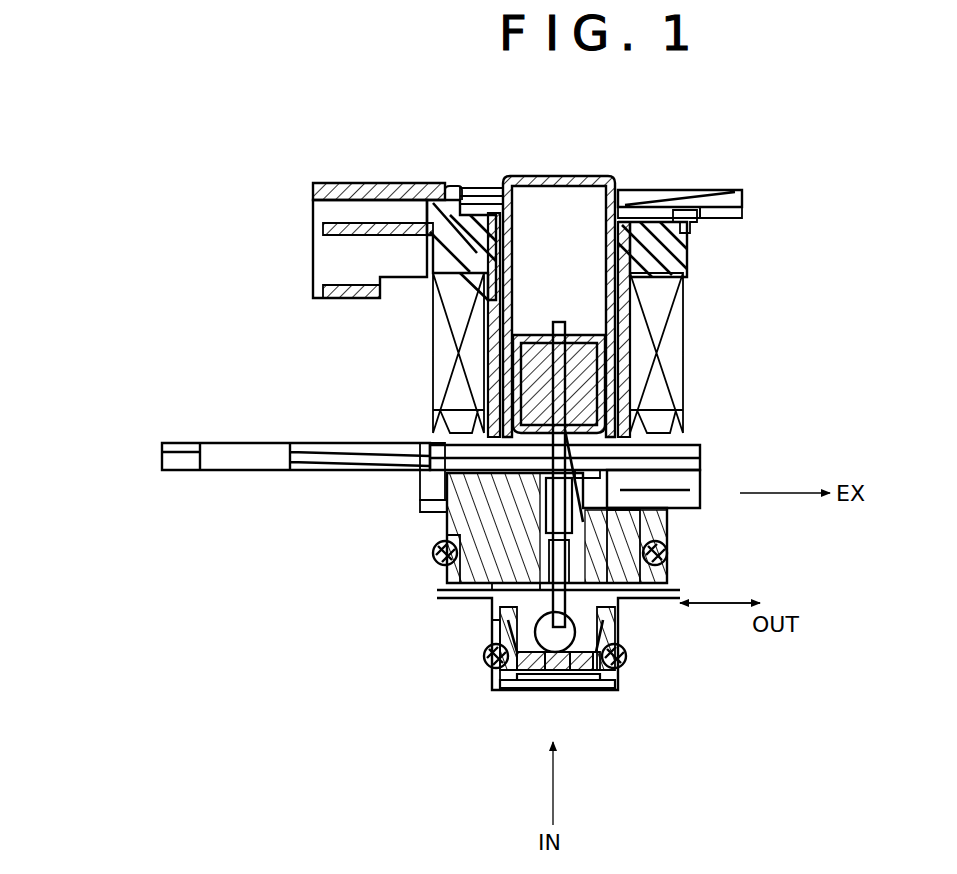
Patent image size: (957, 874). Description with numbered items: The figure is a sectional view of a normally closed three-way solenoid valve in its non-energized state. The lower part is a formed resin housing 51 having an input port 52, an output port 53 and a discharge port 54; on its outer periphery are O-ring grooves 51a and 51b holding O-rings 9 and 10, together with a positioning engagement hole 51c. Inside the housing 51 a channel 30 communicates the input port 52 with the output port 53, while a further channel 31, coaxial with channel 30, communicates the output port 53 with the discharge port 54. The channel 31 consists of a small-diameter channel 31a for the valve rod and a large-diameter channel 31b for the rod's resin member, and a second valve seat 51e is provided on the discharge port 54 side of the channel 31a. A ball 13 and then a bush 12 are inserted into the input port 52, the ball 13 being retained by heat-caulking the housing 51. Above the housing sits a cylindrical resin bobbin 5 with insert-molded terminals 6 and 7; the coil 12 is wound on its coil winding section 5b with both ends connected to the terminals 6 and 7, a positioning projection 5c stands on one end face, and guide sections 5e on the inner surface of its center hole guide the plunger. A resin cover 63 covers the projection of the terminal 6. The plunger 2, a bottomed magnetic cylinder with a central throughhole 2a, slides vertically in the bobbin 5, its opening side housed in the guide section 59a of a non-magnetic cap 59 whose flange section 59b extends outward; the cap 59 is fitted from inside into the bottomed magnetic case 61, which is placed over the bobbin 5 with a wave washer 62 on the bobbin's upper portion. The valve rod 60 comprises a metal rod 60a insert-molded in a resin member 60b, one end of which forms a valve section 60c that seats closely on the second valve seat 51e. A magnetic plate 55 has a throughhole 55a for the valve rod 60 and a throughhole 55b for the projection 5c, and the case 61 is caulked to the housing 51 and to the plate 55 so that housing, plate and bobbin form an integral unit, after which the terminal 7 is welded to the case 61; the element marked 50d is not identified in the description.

The plunger 2 is at (618, 410).
The throughhole 2a is at (570, 415).
The bobbin 5 is at (692, 265).
The coil winding section 5b is at (640, 330).
The positioning projection 5c is at (436, 422).
The guide sections 5e is at (668, 378).
The terminal 6 is at (330, 247).
The terminal 7 is at (742, 215).
The O-ring 9 is at (482, 660).
The O-ring 10 is at (432, 553).
The bush / coil 12 is at (672, 318).
The ball 13 is at (532, 688).
The channel 30 is at (622, 655).
The channel 31 is at (792, 555).
The small-diameter channel 31a is at (667, 570).
The large-diameter channel 31b is at (655, 540).
The O-ring 50d is at (618, 690).
The housing 51 is at (485, 688).
The O-ring groove 51a is at (487, 634).
The O-ring groove 51b is at (445, 545).
The positioning engagement hole 51c is at (430, 512).
The second valve seat 51e is at (510, 590).
The input port 52 is at (588, 689).
The output port 53 is at (630, 602).
The discharge port 54 is at (690, 495).
The plate 55 is at (160, 455).
The throughhole 55a is at (700, 448).
The throughhole 55b is at (435, 450).
The cap 59 is at (680, 88).
The guide section 59a is at (622, 200).
The flange section 59b is at (658, 205).
The valve rod 60 is at (660, 515).
The rod 60a is at (550, 408).
The resin member 60b is at (680, 473).
The valve section 60c is at (555, 582).
The case 61 is at (716, 190).
The wave washer 62 is at (470, 186).
The cover 63 is at (330, 181).